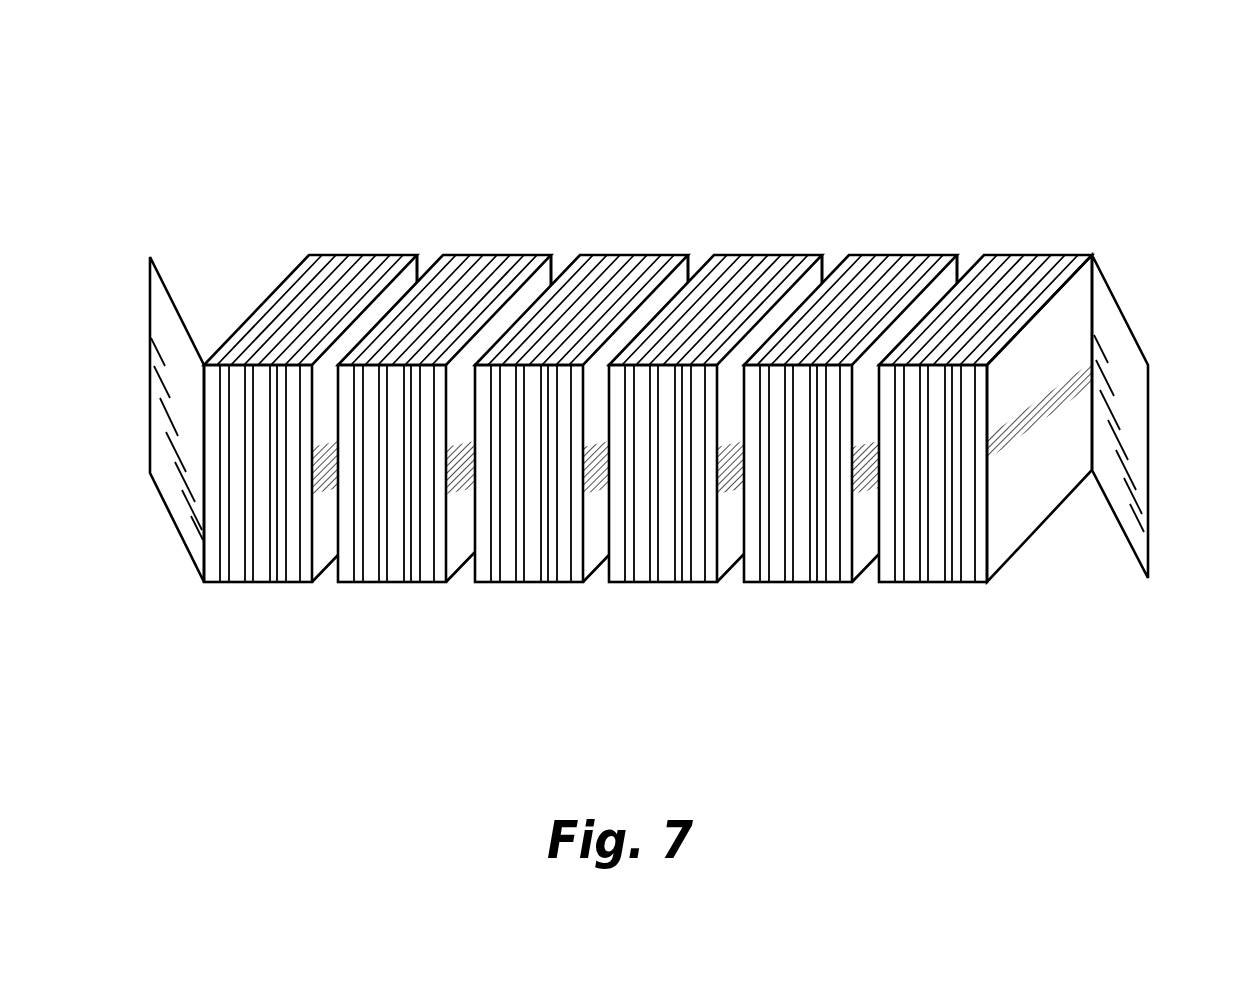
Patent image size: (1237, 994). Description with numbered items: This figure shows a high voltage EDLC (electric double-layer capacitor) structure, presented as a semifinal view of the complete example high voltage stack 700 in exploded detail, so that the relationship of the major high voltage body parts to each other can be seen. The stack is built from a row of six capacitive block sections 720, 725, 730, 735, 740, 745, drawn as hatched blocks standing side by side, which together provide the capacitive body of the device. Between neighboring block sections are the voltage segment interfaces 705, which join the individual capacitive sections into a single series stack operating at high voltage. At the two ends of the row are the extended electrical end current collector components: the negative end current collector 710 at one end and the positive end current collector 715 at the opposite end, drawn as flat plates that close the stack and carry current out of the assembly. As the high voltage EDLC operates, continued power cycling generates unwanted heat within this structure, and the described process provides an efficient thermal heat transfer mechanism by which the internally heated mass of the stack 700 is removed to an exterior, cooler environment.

The high voltage stack 700 is at (224, 67).
The voltage segment interfaces 705 is at (562, 258).
The negative end current collector 710 is at (149, 302).
The positive end current collector 715 is at (1150, 420).
The capacitive block section 720 is at (255, 584).
The capacitive block section 725 is at (395, 584).
The capacitive block section 730 is at (530, 584).
The capacitive block section 735 is at (663, 584).
The capacitive block section 740 is at (793, 584).
The capacitive block section 745 is at (918, 584).